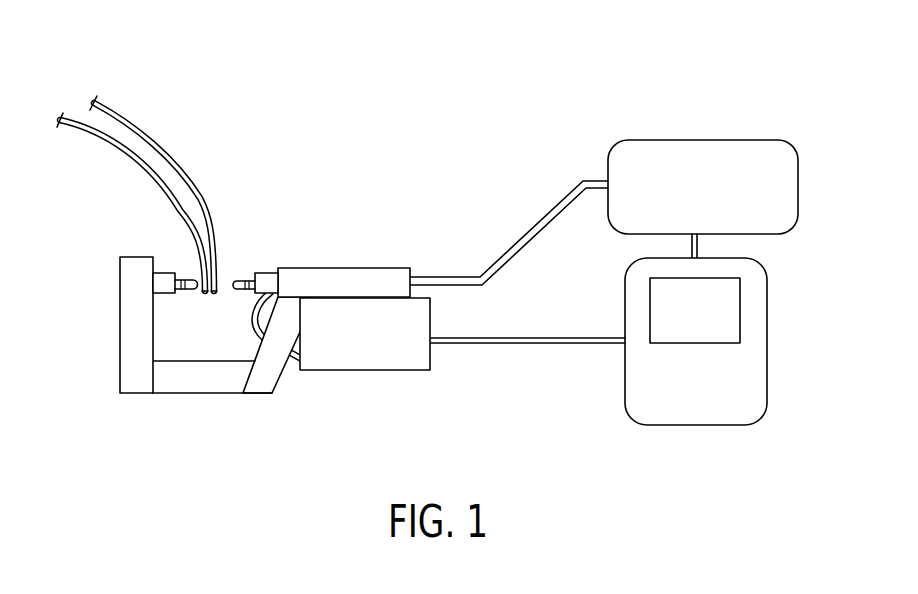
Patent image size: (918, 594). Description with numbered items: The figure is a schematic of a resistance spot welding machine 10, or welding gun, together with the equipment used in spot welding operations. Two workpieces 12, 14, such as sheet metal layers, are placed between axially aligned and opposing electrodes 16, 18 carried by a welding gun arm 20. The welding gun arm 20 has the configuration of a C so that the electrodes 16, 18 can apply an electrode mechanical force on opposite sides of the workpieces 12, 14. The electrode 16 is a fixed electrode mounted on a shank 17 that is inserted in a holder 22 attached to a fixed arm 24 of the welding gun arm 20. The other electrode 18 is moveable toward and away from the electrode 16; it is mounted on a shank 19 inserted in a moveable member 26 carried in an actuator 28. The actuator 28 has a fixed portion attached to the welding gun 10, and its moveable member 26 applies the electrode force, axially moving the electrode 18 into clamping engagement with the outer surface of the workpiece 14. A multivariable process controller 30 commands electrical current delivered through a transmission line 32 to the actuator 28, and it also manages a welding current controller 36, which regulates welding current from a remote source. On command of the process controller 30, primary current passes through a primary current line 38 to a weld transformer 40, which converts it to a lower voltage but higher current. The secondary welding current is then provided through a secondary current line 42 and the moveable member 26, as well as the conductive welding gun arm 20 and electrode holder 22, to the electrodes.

The resistance spot welding machine 10 is at (348, 259).
The workpiece 12 is at (137, 162).
The workpiece 14 is at (135, 128).
The fixed electrode 16 is at (194, 293).
The shank 17 is at (183, 279).
The moveable electrode 18 is at (241, 280).
The shank 19 is at (251, 277).
The welding gun arm 20 is at (206, 393).
The holder 22 is at (160, 283).
The fixed arm 24 is at (137, 344).
The moveable member 26 is at (266, 281).
The actuator 28 is at (388, 281).
The multivariable process controller 30 is at (738, 148).
The transmission line 32 is at (533, 227).
The welding current controller 36 is at (680, 320).
The primary current line 38 is at (543, 348).
The weld transformer 40 is at (372, 359).
The secondary current line 42 is at (252, 313).